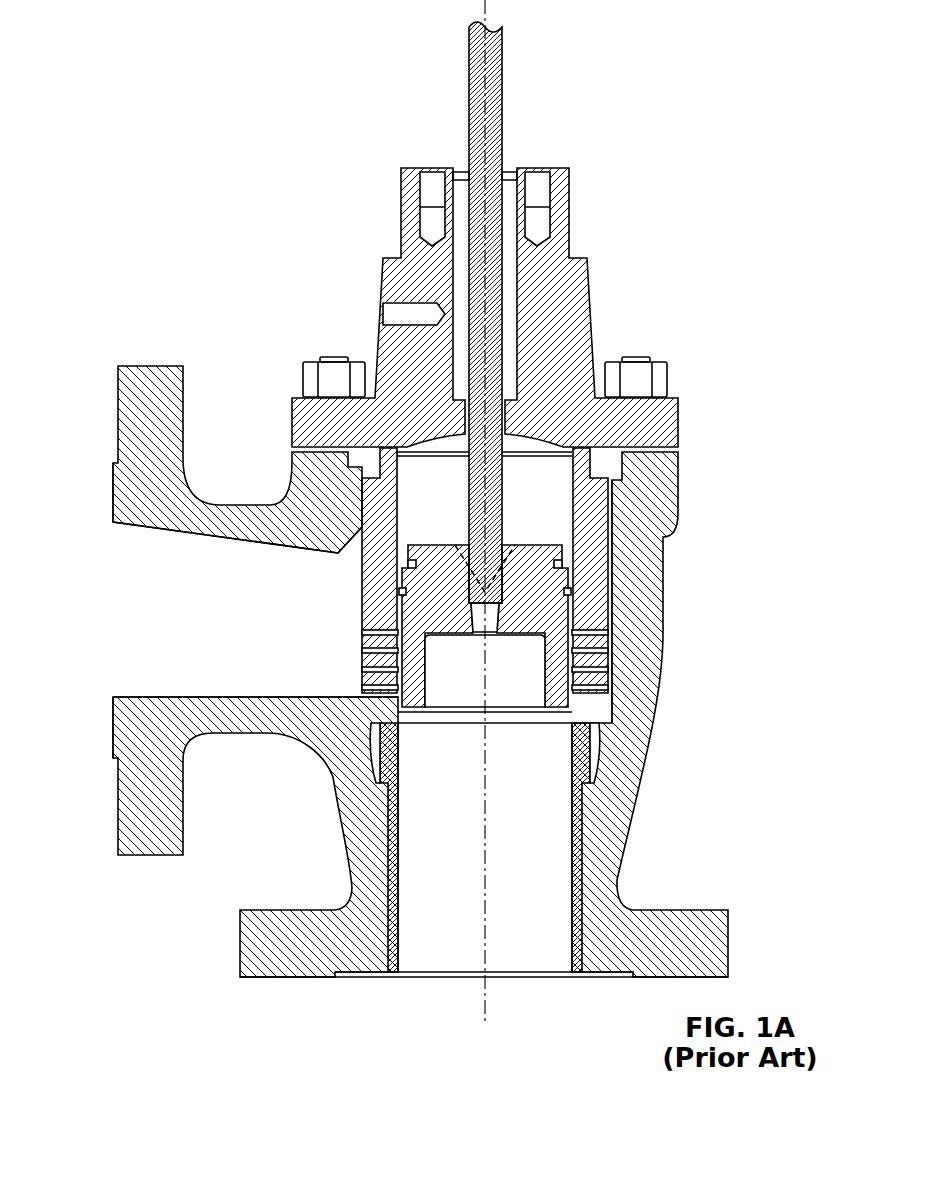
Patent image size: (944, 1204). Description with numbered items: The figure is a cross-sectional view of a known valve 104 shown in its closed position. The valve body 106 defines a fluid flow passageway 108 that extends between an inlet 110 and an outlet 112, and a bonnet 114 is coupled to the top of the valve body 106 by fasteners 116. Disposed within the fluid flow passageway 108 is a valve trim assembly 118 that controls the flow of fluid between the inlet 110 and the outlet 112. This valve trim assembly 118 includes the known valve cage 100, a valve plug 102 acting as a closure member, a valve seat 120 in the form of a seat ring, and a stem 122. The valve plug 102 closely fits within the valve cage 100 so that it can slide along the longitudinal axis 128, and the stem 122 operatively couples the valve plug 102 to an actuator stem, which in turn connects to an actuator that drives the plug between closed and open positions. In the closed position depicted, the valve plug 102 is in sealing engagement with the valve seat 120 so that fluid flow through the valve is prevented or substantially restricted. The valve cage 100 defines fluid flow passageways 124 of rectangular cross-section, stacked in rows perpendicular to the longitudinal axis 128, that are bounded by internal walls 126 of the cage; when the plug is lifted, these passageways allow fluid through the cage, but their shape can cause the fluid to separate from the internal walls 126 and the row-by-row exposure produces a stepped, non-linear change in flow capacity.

The valve cage 100 is at (373, 502).
The valve plug 102 is at (560, 698).
The valve 104 is at (385, 511).
The valve body 106 is at (628, 828).
The fluid flow passageway 108 is at (104, 634).
The inlet 110 is at (112, 568).
The outlet 112 is at (457, 980).
The bonnet 114 is at (383, 282).
The fasteners 116 is at (652, 360).
The valve trim assembly 118 is at (620, 566).
The valve seat 120 is at (528, 712).
The stem 122 is at (468, 97).
The fluid flow passageways 124 is at (358, 652).
The internal walls 126 is at (387, 687).
The longitudinal axis 128 is at (485, 992).